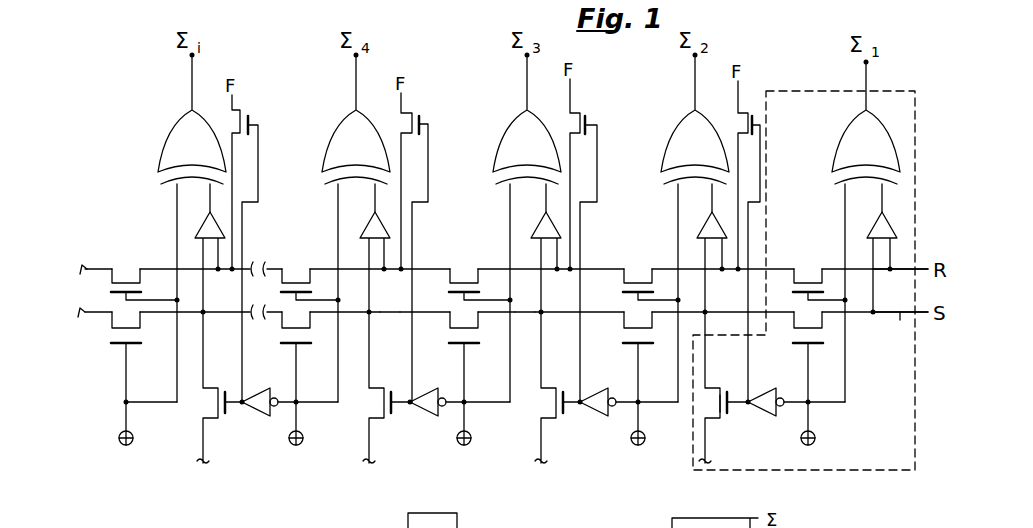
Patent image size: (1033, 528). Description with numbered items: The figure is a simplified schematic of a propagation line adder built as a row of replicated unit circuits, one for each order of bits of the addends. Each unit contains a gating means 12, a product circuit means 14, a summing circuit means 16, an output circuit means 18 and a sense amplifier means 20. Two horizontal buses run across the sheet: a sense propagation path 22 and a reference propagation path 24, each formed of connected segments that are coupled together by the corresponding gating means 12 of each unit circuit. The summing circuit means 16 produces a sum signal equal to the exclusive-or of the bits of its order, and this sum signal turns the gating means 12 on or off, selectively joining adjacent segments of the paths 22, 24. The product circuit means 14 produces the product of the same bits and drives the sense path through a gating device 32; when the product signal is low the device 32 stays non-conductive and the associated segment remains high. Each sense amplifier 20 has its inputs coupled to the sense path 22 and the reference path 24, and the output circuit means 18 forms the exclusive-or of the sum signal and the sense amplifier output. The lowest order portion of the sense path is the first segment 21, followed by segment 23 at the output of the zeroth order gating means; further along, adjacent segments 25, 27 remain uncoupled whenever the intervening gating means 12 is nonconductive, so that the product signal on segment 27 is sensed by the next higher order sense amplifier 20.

The gating means 12 is at (460, 313).
The product circuit means 14 is at (712, 490).
The summing circuit means 16 is at (802, 445).
The output circuit means 18 is at (838, 134).
The sense amplifier means 20 is at (874, 224).
The first segment 21 is at (908, 312).
The sense propagation path 22 is at (900, 315).
The segment 23 is at (780, 306).
The reference propagation path 24 is at (901, 269).
The segment 25 is at (526, 316).
The segment 27 is at (392, 316).
The gating device 32 is at (720, 418).